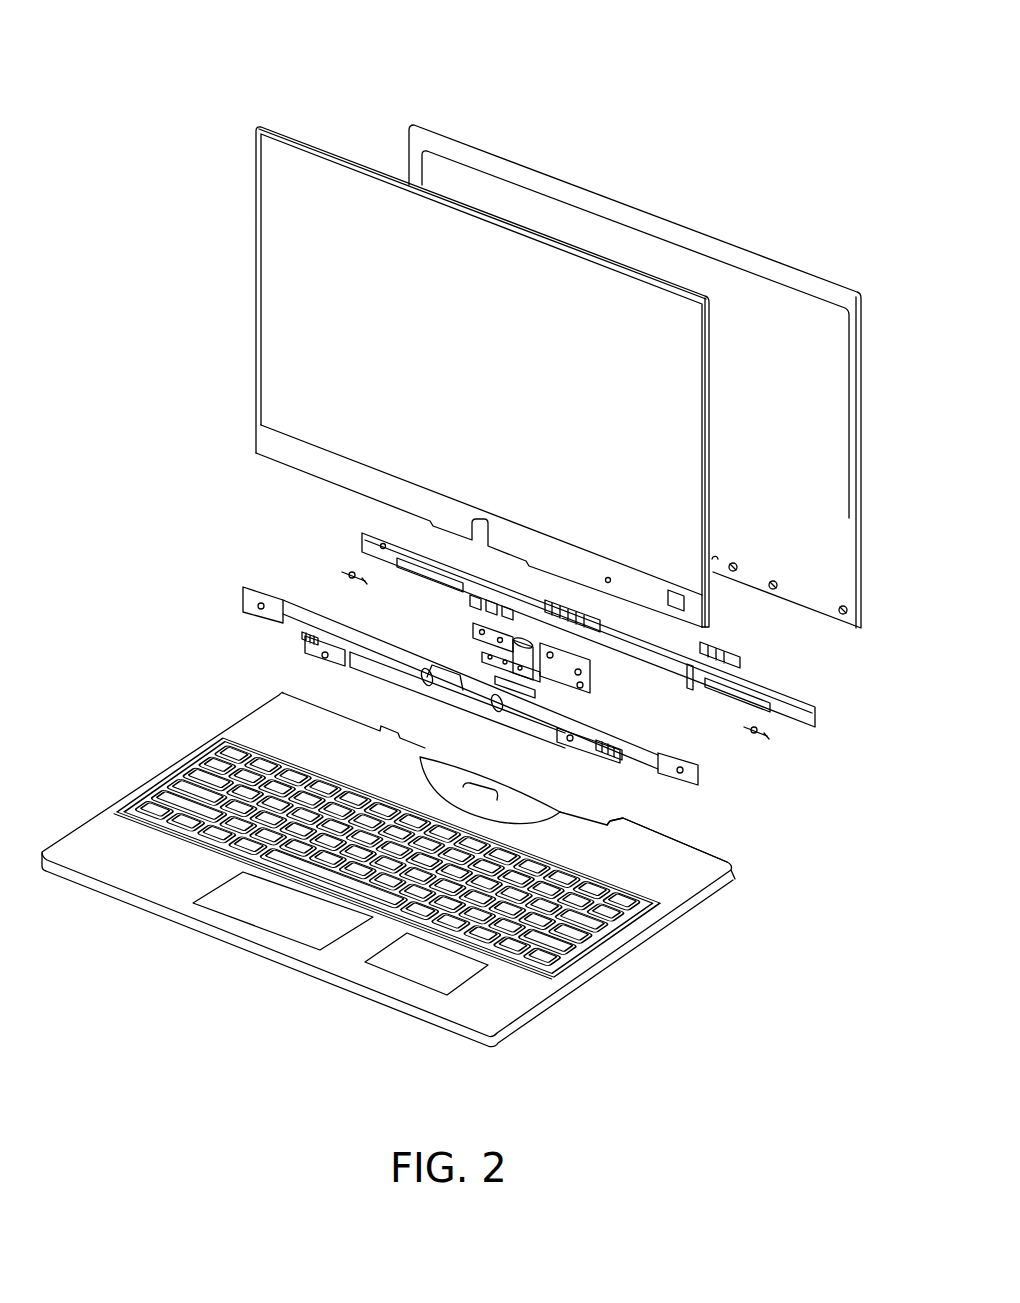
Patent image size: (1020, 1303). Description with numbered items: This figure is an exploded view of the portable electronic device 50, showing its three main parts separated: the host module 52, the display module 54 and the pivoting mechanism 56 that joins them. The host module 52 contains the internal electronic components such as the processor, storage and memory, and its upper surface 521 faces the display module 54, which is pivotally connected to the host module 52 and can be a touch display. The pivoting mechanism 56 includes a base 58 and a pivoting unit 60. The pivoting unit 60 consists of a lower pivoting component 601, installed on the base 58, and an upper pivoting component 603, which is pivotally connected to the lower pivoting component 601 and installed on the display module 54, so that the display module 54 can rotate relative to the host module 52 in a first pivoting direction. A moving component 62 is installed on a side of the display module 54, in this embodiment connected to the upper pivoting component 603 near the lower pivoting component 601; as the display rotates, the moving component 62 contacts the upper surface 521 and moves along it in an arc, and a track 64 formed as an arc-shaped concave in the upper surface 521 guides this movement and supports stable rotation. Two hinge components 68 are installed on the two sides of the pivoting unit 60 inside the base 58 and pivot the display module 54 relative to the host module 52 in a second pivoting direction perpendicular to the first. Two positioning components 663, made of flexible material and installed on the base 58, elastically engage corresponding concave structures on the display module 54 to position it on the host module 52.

The portable electronic device 50 is at (702, 73).
The host module 52 is at (433, 847).
The upper surface 521 is at (718, 845).
The display module 54 is at (350, 113).
The pivoting mechanism 56 is at (241, 522).
The base 58 is at (787, 712).
The pivoting unit 60 is at (450, 642).
The lower pivoting component 601 is at (485, 657).
The upper pivoting component 603 is at (473, 622).
The moving component 62 is at (590, 685).
The track 64 is at (546, 829).
The hinge components 68 is at (325, 658).
The positioning component 663 is at (340, 571).